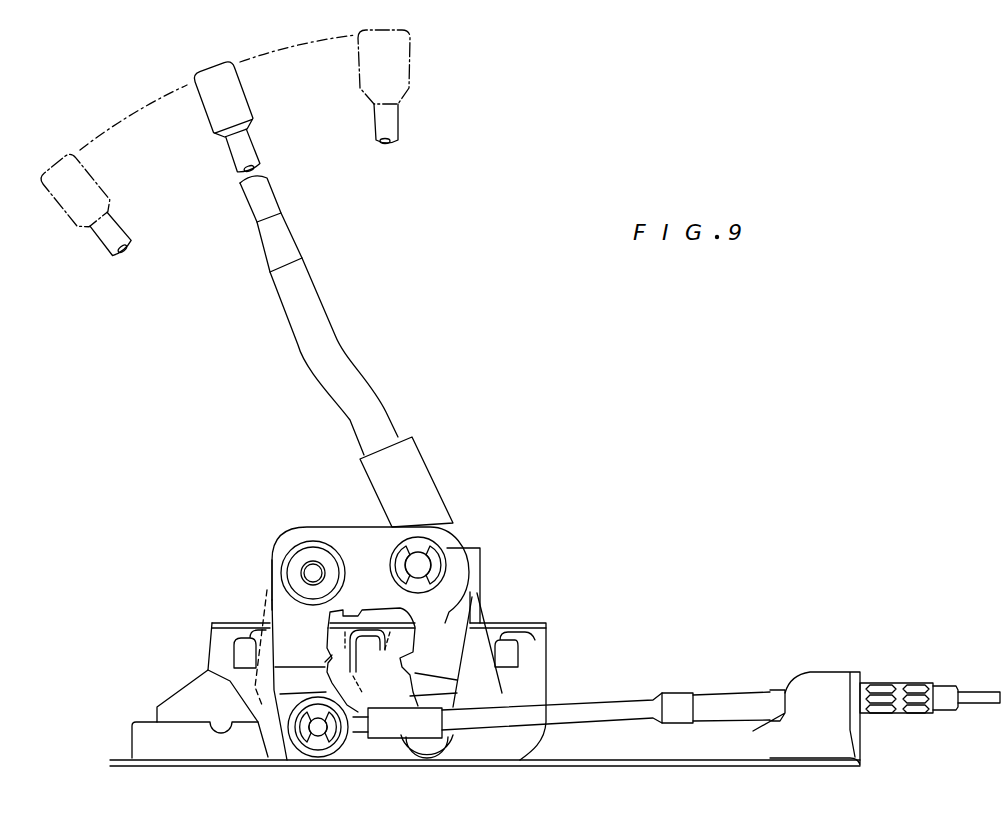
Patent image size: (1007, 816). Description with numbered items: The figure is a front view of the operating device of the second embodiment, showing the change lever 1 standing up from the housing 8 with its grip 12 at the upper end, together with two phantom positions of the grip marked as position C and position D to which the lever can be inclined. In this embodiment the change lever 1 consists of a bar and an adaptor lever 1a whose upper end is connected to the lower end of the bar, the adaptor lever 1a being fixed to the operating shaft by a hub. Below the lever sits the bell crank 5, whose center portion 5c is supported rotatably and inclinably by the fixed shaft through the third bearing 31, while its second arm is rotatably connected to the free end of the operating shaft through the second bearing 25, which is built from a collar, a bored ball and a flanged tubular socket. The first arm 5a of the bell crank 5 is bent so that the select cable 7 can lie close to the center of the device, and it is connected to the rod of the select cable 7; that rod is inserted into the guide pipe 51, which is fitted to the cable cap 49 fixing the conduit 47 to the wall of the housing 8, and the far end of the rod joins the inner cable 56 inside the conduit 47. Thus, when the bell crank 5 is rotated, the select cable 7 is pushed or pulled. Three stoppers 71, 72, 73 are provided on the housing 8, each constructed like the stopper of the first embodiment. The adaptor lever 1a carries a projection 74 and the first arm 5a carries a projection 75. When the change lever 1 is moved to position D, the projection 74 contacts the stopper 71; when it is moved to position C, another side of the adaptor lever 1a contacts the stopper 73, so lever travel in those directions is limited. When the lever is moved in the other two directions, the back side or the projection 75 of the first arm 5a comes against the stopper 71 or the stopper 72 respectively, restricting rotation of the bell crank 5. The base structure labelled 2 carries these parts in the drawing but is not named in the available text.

The change lever 1 is at (360, 343).
The adaptor lever 1a is at (422, 488).
The base housing 2 is at (488, 549).
The bell crank 5 is at (256, 603).
The first arm 5a is at (352, 538).
The center portion 5c is at (277, 568).
The select cable 7 is at (624, 686).
The housing 8 is at (212, 623).
The grip 12 is at (240, 103).
The second bearing 25 is at (432, 555).
The third bearing 31 is at (303, 566).
The conduit 47 is at (947, 686).
The cable cap 49 is at (893, 683).
The guide pipe 51 is at (727, 693).
The inner cable 56 is at (980, 692).
The stopper 71 is at (350, 670).
The stopper 72 is at (235, 657).
The stopper 73 is at (515, 653).
The projection 74 is at (410, 662).
The projection 75 is at (325, 662).
The position C is at (89, 208).
The position D is at (394, 87).